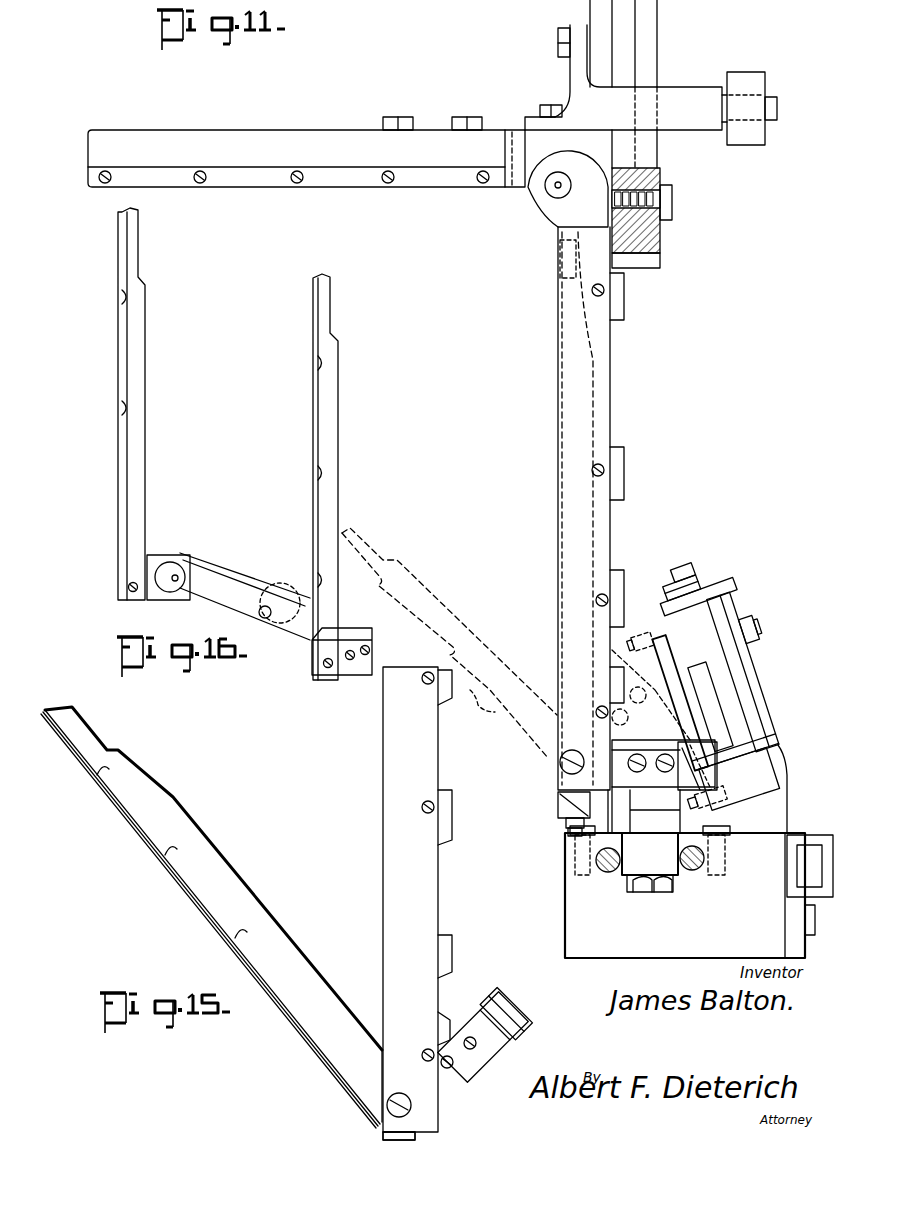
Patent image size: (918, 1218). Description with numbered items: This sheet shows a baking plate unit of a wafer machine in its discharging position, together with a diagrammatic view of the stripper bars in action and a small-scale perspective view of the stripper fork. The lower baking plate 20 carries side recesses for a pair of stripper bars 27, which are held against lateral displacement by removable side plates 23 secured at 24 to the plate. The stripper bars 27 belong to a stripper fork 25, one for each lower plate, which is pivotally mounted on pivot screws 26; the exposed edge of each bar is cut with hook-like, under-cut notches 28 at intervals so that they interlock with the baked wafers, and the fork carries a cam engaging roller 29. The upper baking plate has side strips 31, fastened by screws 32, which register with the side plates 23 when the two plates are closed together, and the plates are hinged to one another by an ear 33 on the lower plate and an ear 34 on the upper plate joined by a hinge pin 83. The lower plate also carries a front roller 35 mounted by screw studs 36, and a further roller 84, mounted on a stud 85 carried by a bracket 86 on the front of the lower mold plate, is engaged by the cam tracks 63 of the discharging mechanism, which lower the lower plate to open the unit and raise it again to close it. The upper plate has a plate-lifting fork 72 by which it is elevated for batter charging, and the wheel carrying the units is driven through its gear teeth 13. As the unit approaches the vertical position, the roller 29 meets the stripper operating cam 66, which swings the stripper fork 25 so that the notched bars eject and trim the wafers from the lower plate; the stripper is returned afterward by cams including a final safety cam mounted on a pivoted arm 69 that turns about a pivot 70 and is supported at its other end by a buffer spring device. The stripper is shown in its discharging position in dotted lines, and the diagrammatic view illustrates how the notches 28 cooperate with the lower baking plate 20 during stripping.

In FIG. 11, the gear teeth 13 is at (745, 135).
In FIG. 11, the lower baking plate 20 is at (618, 455).
In FIG. 15, the lower baking plate 20 is at (440, 820).
In FIG. 11, the side plates 23 is at (610, 400).
In FIG. 11, the securing points 24 is at (602, 476).
In FIG. 15, the securing points 24 is at (430, 813).
In FIG. 11, the stripper fork 25 is at (566, 822).
In FIG. 16, the stripper fork 25 is at (230, 585).
In FIG. 15, the stripper fork 25 is at (465, 1058).
In FIG. 11, the pivot screws 26 is at (560, 768).
In FIG. 16, the pivot screws 26 is at (133, 592).
In FIG. 15, the pivot screws 26 is at (387, 1110).
In FIG. 11, the stripper bars 27 is at (450, 607).
In FIG. 16, the stripper bars 27 is at (140, 353).
In FIG. 15, the stripper bars 27 is at (233, 883).
In FIG. 11, the notches 28 is at (448, 650).
In FIG. 16, the notches 28 is at (318, 367).
In FIG. 15, the notches 28 is at (240, 935).
In FIG. 11, the cam engaging roller 29 is at (705, 755).
In FIG. 16, the cam engaging roller 29 is at (283, 585).
In FIG. 15, the cam engaging roller 29 is at (505, 1000).
In FIG. 11, the side strips 31 is at (340, 170).
In FIG. 11, the screws 32 is at (483, 183).
In FIG. 11, the ear 33 is at (545, 205).
In FIG. 11, the ear 34 is at (535, 140).
In FIG. 11, the roller 35 is at (530, 812).
In FIG. 15, the roller 35 is at (420, 1130).
In FIG. 11, the screw studs 36 is at (568, 832).
In FIG. 11, the cam tracks 63 is at (598, 865).
In FIG. 11, the stripper operating cam 66 is at (680, 722).
In FIG. 11, the pivoted arm 69 is at (748, 680).
In FIG. 11, the pivot 70 is at (742, 622).
In FIG. 11, the plate-lifting fork 72 is at (690, 88).
In FIG. 11, the hinge pin 83 is at (552, 190).
In FIG. 11, the roller 84 is at (650, 854).
In FIG. 11, the stud 85 is at (640, 880).
In FIG. 11, the bracket 86 is at (700, 795).